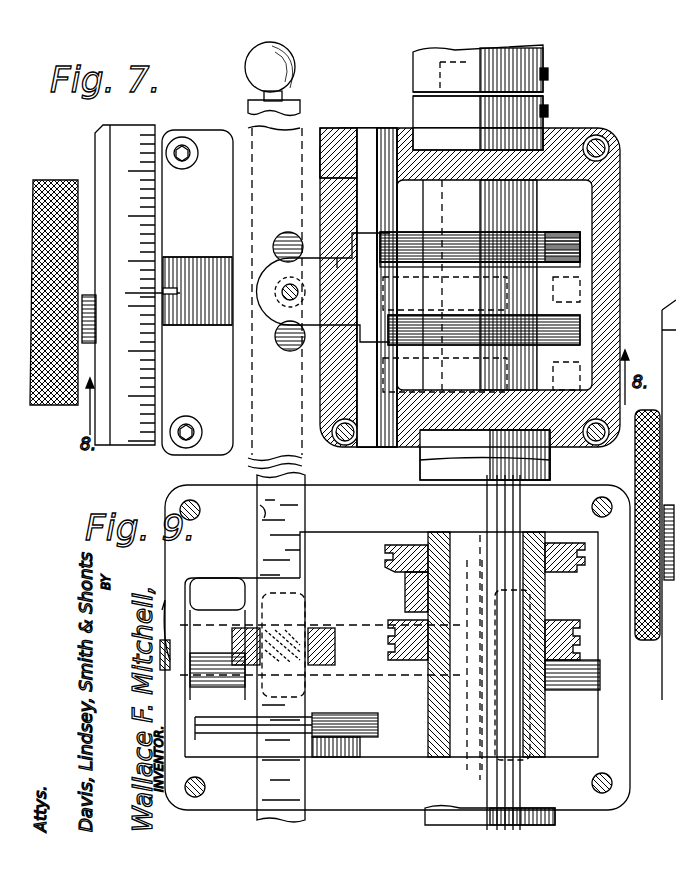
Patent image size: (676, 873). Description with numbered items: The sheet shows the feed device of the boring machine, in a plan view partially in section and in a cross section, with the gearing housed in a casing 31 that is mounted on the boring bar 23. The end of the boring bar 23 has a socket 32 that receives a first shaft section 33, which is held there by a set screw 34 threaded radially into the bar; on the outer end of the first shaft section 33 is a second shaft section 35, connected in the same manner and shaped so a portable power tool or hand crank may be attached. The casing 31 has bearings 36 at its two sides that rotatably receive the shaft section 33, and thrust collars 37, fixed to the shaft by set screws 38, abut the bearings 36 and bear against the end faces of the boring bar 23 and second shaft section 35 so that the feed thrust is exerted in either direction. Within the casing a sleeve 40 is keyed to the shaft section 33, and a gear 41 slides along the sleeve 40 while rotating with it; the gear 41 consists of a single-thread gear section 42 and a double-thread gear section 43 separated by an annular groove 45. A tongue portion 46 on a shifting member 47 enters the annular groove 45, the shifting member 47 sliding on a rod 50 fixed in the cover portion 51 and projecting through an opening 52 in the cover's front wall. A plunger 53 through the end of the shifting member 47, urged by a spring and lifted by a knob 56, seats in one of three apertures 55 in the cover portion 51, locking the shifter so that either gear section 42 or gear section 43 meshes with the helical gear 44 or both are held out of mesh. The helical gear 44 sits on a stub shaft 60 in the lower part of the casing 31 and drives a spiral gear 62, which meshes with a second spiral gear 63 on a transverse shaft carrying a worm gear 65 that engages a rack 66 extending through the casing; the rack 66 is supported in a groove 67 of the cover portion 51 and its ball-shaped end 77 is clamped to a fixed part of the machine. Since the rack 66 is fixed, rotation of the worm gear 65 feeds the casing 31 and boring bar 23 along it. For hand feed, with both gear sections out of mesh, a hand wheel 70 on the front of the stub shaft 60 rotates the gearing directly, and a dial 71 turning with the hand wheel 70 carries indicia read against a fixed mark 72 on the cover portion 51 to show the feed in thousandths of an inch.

In FIG. 7, the boring bar 23 is at (413, 62).
In FIG. 7, the casing 31 is at (208, 146).
In FIG. 9, the casing 31 is at (615, 763).
In FIG. 7, the socket 32 is at (438, 82).
In FIG. 7, the first shaft section 33 is at (450, 202).
In FIG. 9, the first shaft section 33 is at (515, 776).
In FIG. 7, the set screw 34 is at (549, 74).
In FIG. 9, the second shaft section 35 is at (557, 816).
In FIG. 7, the bearings 36 is at (545, 138).
In FIG. 7, the thrust collars 37 is at (420, 105).
In FIG. 7, the set screws 38 is at (549, 110).
In FIG. 9, the sleeve 40 is at (548, 727).
In FIG. 7, the gear 41 is at (586, 262).
In FIG. 9, the gear 41 is at (410, 545).
In FIG. 7, the gear section 42 is at (558, 246).
In FIG. 9, the gear section 42 is at (566, 545).
In FIG. 7, the gear section 43 is at (582, 332).
In FIG. 9, the gear section 43 is at (573, 665).
In FIG. 9, the helical gear 44 is at (455, 722).
In FIG. 7, the annular groove 45 is at (562, 285).
In FIG. 9, the annular groove 45 is at (415, 588).
In FIG. 7, the tongue portion 46 is at (462, 262).
In FIG. 7, the shifting member 47 is at (336, 266).
In FIG. 7, the rod 50 is at (366, 188).
In FIG. 7, the cover portion 51 is at (606, 215).
In FIG. 7, the opening 52 is at (320, 198).
In FIG. 7, the plunger 53 is at (300, 292).
In FIG. 7, the apertures 55 is at (283, 240).
In FIG. 7, the knob 56 is at (372, 444).
In FIG. 9, the stub shaft 60 is at (175, 618).
In FIG. 9, the spiral gear 62 is at (330, 588).
In FIG. 9, the second spiral gear 63 is at (338, 640).
In FIG. 9, the worm gear 65 is at (345, 715).
In FIG. 7, the rack 66 is at (250, 108).
In FIG. 9, the rack 66 is at (268, 536).
In FIG. 9, the groove 67 is at (262, 515).
In FIG. 7, the hand wheel 70 is at (47, 405).
In FIG. 9, the hand wheel 70 is at (648, 640).
In FIG. 7, the dial 71 is at (128, 125).
In FIG. 7, the fixed mark 72 is at (176, 292).
In FIG. 7, the ball-shaped end 77 is at (294, 60).